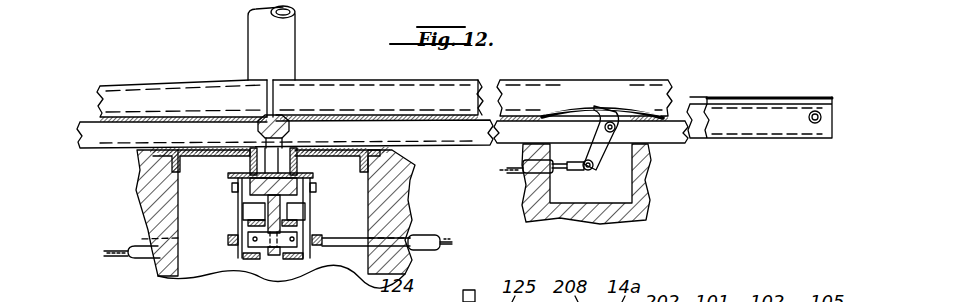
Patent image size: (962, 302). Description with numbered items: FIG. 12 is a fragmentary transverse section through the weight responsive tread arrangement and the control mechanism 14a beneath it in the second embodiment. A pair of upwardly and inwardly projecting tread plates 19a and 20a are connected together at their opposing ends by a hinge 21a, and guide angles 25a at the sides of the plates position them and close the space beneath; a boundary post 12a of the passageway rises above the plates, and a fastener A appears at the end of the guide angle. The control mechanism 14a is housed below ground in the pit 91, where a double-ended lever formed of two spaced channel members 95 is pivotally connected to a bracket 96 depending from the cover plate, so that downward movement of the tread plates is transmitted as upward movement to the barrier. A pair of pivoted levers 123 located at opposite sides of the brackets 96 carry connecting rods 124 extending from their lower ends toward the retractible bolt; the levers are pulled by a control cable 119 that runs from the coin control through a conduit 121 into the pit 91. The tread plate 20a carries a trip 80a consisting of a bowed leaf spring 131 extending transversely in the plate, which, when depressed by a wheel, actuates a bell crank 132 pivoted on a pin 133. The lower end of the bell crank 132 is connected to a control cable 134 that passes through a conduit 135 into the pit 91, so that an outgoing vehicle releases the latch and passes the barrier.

The boundary post 12a is at (250, 49).
The tread plate 19a is at (147, 116).
The tread plate 20a is at (345, 112).
The hinge 21a is at (290, 106).
The guide angle 25a is at (713, 112).
The fastener A is at (817, 95).
The trip 80a is at (615, 100).
The bowed leaf spring 131 is at (578, 110).
The bell crank 132 is at (604, 138).
The pin 133 is at (622, 150).
The control cable 134 is at (446, 243).
The conduit 135 is at (416, 236).
The pit 91 is at (182, 194).
The channel members 95 is at (298, 200).
The bracket 96 is at (236, 188).
The pivoted lever 123 is at (254, 211).
The connecting rod 124 is at (236, 238).
The control mechanism 14a is at (173, 241).
The control cable 119 is at (113, 258).
The conduit 121 is at (142, 260).